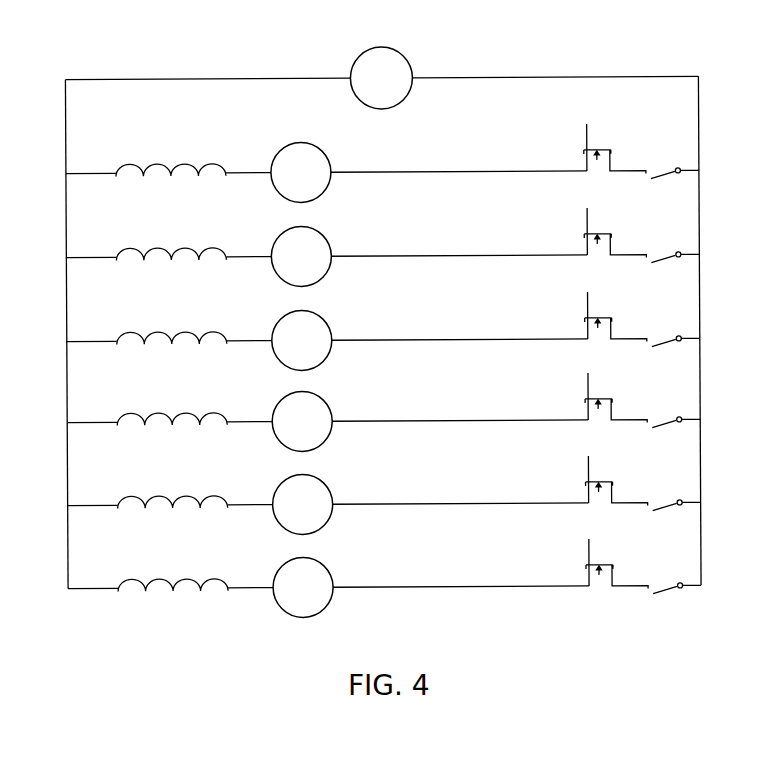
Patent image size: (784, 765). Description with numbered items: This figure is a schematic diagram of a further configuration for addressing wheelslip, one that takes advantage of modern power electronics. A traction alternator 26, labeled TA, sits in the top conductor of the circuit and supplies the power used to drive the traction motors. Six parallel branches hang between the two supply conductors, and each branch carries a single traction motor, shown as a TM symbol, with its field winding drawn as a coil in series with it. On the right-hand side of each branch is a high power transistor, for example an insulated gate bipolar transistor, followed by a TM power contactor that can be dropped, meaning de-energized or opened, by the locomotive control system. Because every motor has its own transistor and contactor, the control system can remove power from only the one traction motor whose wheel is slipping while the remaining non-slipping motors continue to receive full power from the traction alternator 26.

The traction alternator 26 is at (399, 52).